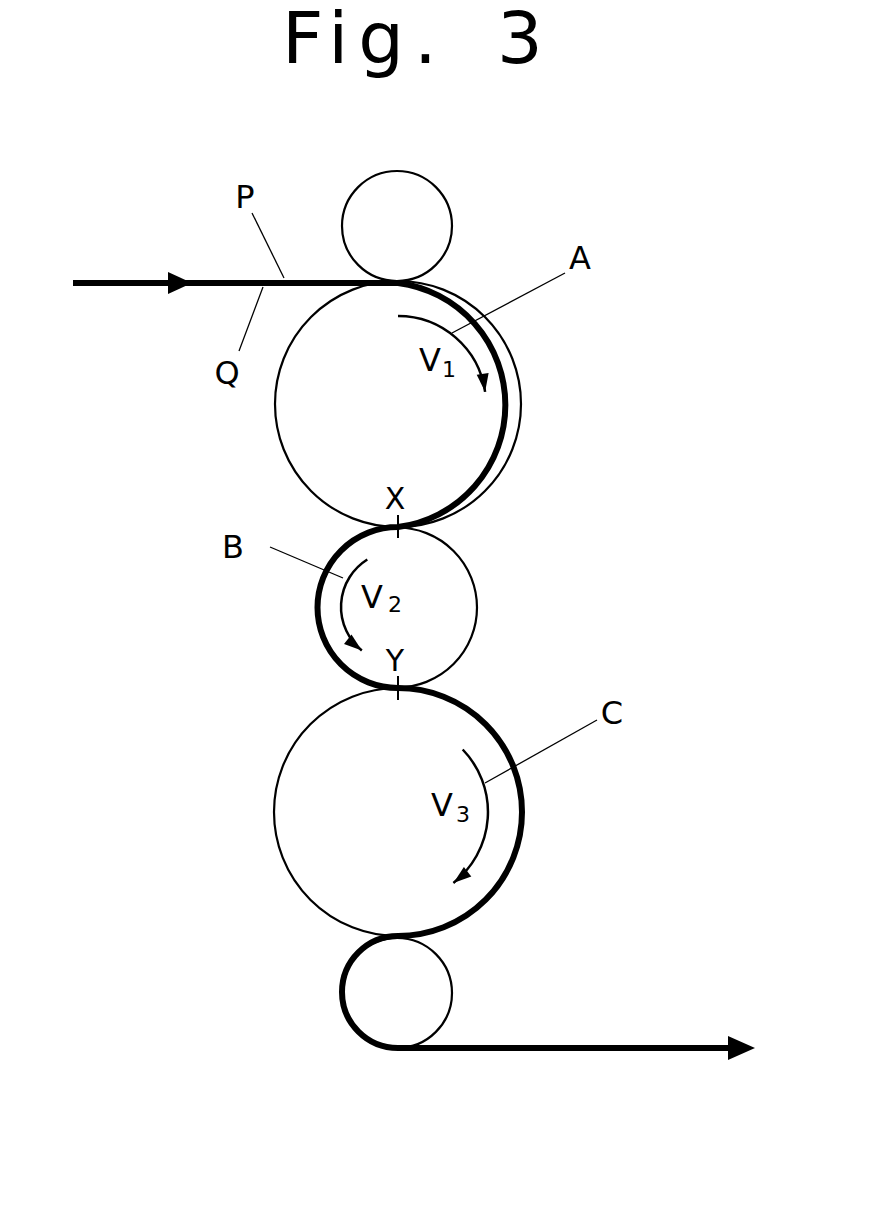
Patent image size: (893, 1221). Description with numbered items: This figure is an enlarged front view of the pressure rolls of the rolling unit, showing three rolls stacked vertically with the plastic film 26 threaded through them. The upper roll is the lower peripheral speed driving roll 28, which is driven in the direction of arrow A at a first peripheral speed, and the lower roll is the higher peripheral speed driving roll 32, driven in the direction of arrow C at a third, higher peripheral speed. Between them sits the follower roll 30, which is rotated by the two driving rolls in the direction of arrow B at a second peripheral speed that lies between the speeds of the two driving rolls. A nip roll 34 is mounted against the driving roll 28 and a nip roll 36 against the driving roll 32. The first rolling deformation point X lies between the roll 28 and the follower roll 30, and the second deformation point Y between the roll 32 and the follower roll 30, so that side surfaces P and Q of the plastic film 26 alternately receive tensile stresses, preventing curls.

The plastic film 26 is at (213, 278).
The lower peripheral speed driving roll 28 is at (492, 445).
The follower roll 30 is at (457, 613).
The higher peripheral speed driving roll 32 is at (512, 815).
The nip roll 34 is at (447, 198).
The nip roll 36 is at (435, 993).